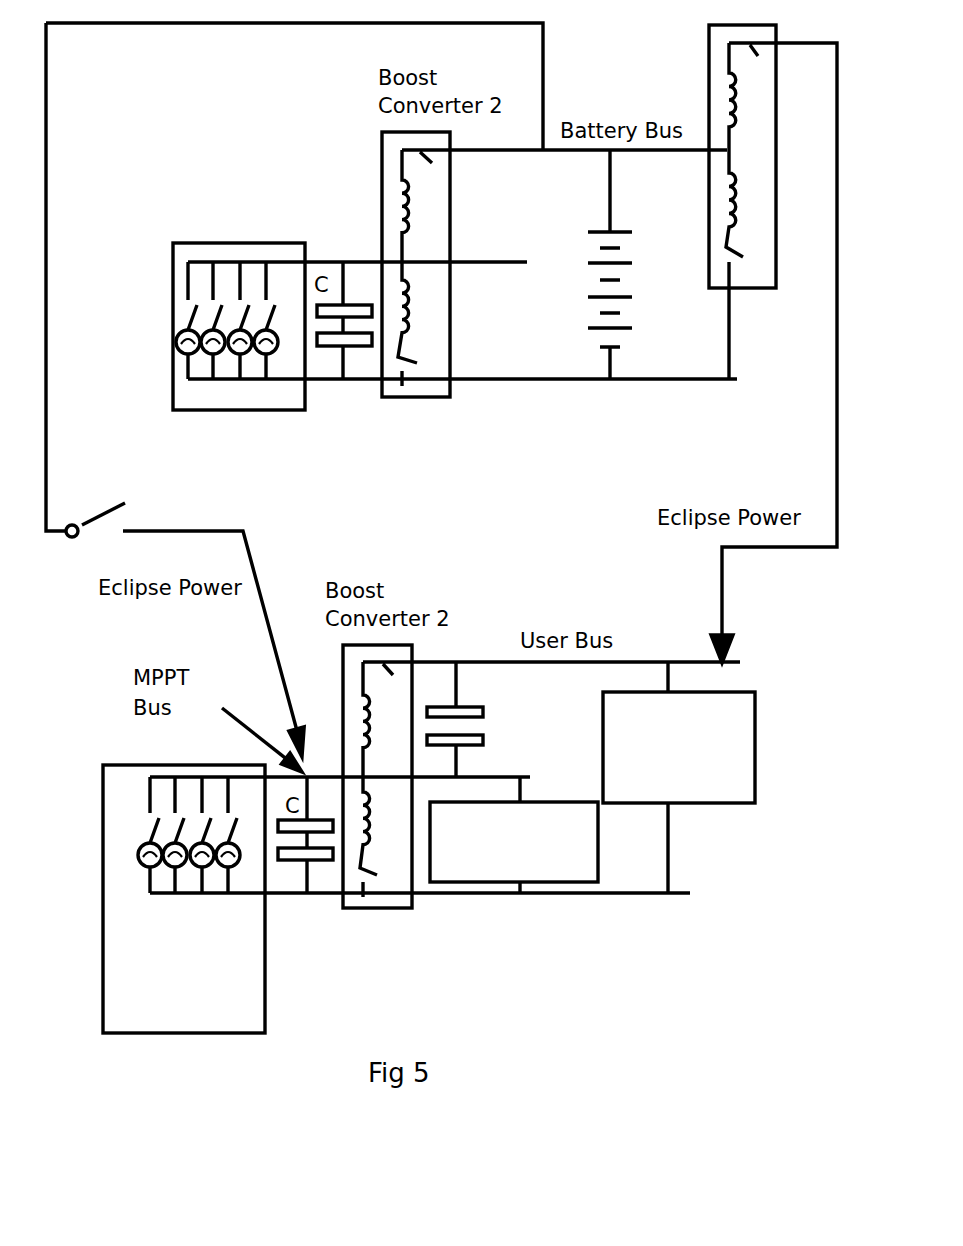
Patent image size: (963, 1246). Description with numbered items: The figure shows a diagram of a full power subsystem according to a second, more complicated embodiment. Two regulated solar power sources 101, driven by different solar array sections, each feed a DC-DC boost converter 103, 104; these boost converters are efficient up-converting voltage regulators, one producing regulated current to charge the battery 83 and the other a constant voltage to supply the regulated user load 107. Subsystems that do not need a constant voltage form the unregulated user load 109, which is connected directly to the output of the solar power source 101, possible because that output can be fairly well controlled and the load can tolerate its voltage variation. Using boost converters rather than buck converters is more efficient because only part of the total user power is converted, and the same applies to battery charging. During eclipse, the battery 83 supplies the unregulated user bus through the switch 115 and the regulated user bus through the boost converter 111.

The regulated solar power source 101 is at (292, 385).
The DC-DC boost converter 104 is at (437, 347).
The battery 83 is at (640, 293).
The boost converter 111 is at (757, 200).
The switch 115 is at (102, 527).
The DC-DC boost converter 103 is at (393, 857).
The unregulated user load 109 is at (587, 868).
The regulated user load 107 is at (703, 782).